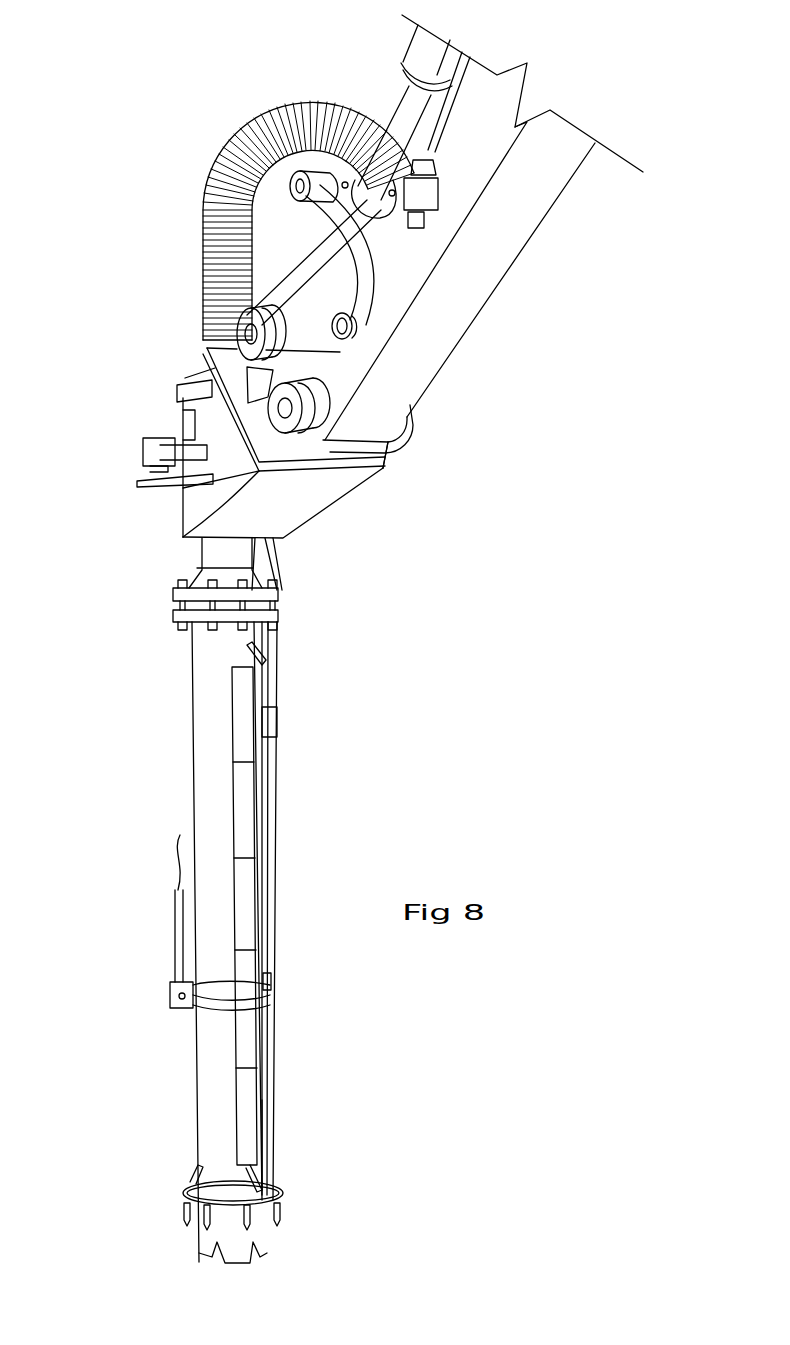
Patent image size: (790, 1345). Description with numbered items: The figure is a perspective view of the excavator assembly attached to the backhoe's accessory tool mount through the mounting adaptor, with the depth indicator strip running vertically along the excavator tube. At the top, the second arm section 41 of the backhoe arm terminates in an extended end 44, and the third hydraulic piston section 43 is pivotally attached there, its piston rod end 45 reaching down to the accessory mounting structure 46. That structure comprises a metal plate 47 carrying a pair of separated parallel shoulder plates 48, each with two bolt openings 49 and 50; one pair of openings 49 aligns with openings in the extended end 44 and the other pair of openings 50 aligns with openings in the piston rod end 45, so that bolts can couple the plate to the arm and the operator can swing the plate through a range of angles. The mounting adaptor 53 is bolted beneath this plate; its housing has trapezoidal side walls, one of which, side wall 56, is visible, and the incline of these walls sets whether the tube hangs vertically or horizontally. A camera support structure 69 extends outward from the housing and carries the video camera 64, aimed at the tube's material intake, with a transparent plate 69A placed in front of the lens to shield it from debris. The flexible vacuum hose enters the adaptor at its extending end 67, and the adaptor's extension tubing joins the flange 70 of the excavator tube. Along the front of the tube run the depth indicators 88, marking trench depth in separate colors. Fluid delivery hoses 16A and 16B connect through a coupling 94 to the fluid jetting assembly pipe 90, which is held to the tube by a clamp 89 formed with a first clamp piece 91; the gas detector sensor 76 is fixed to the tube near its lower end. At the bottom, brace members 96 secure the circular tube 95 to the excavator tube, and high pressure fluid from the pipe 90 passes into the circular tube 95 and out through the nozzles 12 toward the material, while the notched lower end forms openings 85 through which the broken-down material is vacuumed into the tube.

The second arm section 41 is at (492, 240).
The third hydraulic piston section 43 is at (376, 87).
The extending end of flexible vacuum hose fourth section 67 is at (238, 243).
The piston rod end 45 is at (290, 298).
The bolt opening 49 is at (250, 330).
The shoulder plate 48 is at (270, 368).
The side wall 56 is at (195, 405).
The camera support structure 69 is at (183, 418).
The video camera 64 is at (143, 450).
The transparent plate 69A is at (165, 487).
The bolt opening 50 is at (287, 412).
The flange of excavator tube 70 is at (180, 598).
The extended end of second arm section 44 is at (370, 412).
The accessory mounting structure 46 is at (405, 467).
The metal plate 47 is at (382, 462).
The mounting adaptor 53 is at (342, 510).
The fluid delivery hose 16A is at (278, 642).
The coupling 94 is at (278, 723).
The fluid delivery hose 16B is at (270, 908).
The clamp 89 is at (282, 985).
The fluid jetting assembly pipe 90 is at (265, 1105).
The gas detector sensor 76 is at (170, 983).
The first clamp piece 91 is at (220, 1000).
The depth indicators 88 is at (237, 1060).
The brace member 96 is at (193, 1170).
The circular tube 95 is at (193, 1197).
The nozzle 12 is at (283, 1213).
The opening 85 is at (255, 1257).